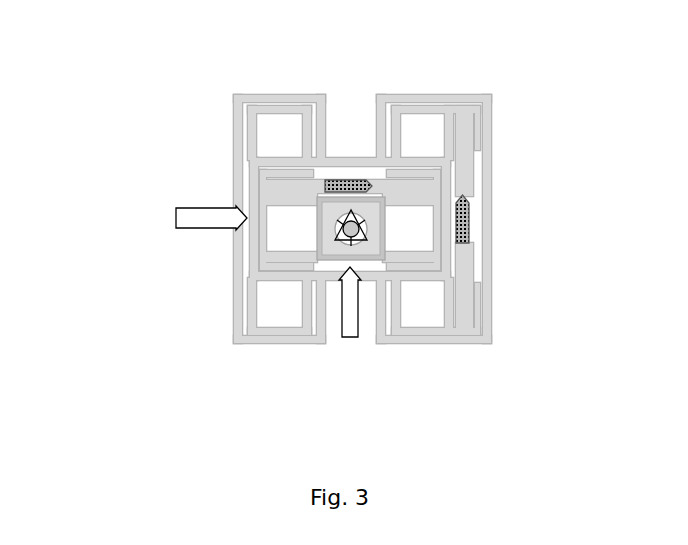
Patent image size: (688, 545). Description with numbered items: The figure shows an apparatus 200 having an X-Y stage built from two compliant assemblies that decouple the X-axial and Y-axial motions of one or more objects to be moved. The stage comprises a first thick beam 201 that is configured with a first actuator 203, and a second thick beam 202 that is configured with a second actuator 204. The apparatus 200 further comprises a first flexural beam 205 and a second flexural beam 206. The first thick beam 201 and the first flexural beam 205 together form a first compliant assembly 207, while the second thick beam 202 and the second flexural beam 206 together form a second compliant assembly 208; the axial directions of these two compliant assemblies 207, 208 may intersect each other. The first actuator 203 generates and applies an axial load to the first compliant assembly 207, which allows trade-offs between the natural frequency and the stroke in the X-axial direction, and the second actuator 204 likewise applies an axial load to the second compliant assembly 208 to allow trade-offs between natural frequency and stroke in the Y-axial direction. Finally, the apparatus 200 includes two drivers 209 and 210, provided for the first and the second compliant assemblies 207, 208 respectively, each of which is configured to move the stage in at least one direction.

The apparatus 200 is at (357, 30).
The first thick beam 201 is at (271, 187).
The second thick beam 202 is at (457, 295).
The first actuator 203 is at (354, 186).
The second actuator 204 is at (463, 221).
The first flexural beam 205 is at (274, 257).
The second flexural beam 206 is at (446, 124).
The first compliant assembly 207 is at (295, 237).
The second compliant assembly 208 is at (424, 305).
The driver 209 is at (196, 222).
The driver 210 is at (350, 318).